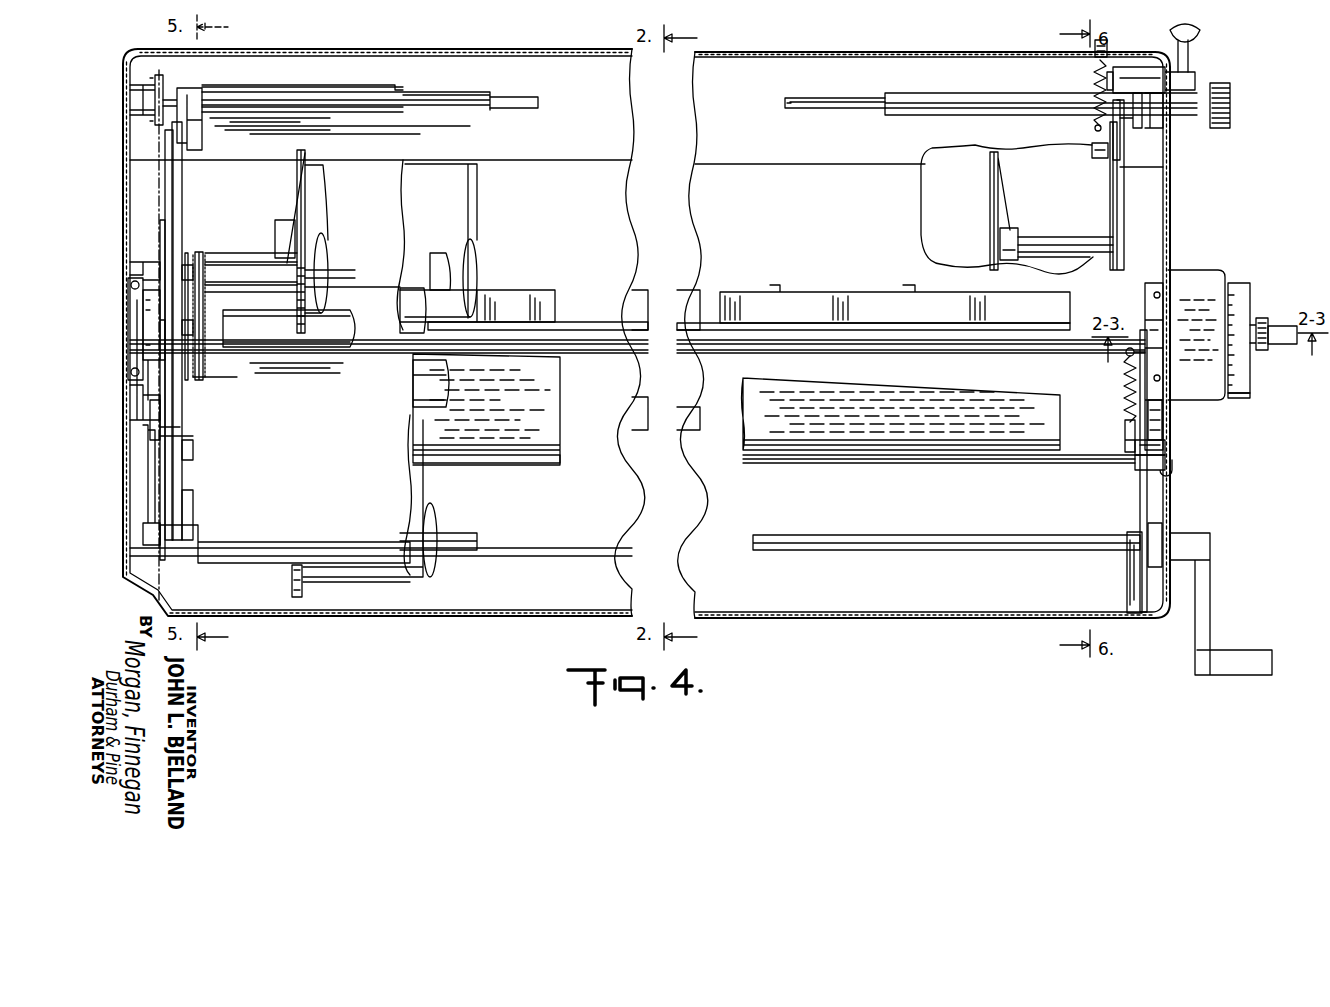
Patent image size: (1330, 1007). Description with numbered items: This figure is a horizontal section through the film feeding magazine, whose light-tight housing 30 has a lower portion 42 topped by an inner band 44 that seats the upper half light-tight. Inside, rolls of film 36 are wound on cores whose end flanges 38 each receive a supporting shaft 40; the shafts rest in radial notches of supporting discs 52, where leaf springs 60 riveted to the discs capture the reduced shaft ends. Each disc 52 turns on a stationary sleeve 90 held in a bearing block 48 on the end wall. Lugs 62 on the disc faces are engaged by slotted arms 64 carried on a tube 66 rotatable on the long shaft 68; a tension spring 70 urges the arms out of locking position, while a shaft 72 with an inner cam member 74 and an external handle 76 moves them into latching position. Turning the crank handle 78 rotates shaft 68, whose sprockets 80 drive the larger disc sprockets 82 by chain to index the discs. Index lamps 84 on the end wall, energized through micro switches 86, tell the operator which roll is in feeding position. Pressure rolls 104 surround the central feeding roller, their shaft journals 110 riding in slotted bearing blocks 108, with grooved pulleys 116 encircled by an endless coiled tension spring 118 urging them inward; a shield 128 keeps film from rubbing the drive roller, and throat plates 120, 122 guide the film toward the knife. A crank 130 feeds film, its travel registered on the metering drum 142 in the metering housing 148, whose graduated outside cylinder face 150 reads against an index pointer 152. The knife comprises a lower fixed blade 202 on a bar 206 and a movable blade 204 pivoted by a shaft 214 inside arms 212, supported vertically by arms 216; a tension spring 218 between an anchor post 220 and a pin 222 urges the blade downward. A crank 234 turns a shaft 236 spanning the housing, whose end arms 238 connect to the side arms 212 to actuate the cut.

The light-tight housing 30 is at (863, 614).
The film 36 is at (323, 182).
The flanges 38 is at (303, 150).
The supporting shaft 40 is at (246, 236).
The lower portion 42 is at (1168, 210).
The inner band 44 is at (1148, 45).
The bearing blocks 48 is at (132, 294).
The supporting discs 52 is at (182, 178).
The leaf springs 60 is at (178, 208).
The lugs 62 is at (195, 128).
The arms 64 is at (195, 92).
The tube 66 is at (475, 94).
The shaft 68 is at (523, 96).
The tension spring 70 is at (1092, 80).
The shaft 72 is at (1165, 80).
The cam member 74 is at (1093, 98).
The handle 76 is at (1192, 62).
The crank handle 78 is at (1233, 90).
The sprocket 80 is at (172, 62).
The sprockets 82 is at (132, 262).
The index lamps 84 is at (1170, 460).
The micro switches 86 is at (1162, 445).
The stationary sleeve 90 is at (135, 329).
The pressure rolls 104 is at (430, 254).
The slotted bearing blocks 108 is at (184, 234).
The journals 110 is at (311, 308).
The grooved pulleys 116 is at (208, 264).
The endless coiled tension spring 118 is at (210, 294).
The metal plate 120 is at (401, 147).
The metal plate 122 is at (388, 90).
The shield 128 is at (340, 368).
The crank 130 is at (1278, 322).
The metering drum 142 is at (1265, 287).
The metering housing 148 is at (1210, 262).
The outside cylinder face 150 is at (1242, 276).
The index pointer 152 is at (1240, 392).
The lower fixed blade 202 is at (538, 302).
The movable blade 204 is at (550, 374).
The bar 206 is at (495, 294).
The arms 212 is at (138, 485).
The shaft 214 is at (178, 437).
The arms 216 is at (130, 428).
The tension spring 218 is at (1128, 380).
The anchor post 220 is at (1126, 354).
The pin 222 is at (1126, 432).
The crank 234 is at (1220, 622).
The shaft 236 is at (492, 518).
The arms 238 is at (144, 588).